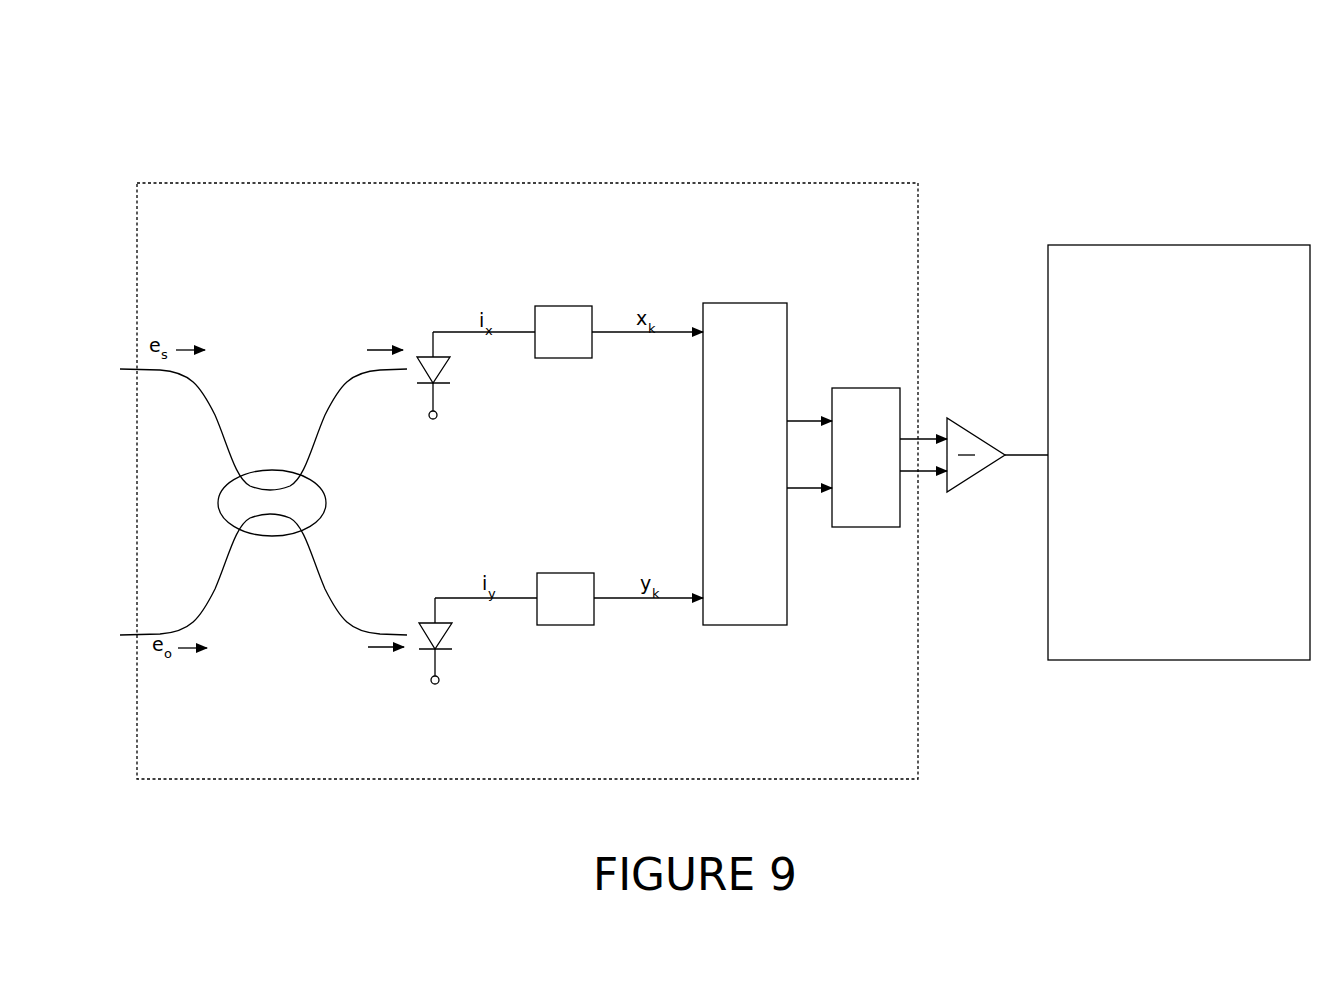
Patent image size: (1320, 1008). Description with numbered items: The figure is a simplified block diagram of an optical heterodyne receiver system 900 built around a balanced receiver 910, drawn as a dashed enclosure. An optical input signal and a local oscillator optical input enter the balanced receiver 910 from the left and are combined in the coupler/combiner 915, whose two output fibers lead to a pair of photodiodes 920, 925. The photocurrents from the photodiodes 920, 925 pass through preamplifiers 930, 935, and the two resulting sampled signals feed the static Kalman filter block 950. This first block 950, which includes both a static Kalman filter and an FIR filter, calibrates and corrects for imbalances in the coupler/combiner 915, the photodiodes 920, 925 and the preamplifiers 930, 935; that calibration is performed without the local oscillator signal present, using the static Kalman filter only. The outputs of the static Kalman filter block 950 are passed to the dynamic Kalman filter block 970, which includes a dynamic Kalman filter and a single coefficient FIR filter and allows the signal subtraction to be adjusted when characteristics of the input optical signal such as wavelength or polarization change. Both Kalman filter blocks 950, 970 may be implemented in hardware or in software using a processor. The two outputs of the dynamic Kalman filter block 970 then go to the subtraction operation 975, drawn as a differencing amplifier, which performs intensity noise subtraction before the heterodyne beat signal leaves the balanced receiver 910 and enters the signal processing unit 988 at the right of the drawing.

The optical heterodyne receiver system 900 is at (851, 86).
The balanced receiver 910 is at (453, 162).
The coupler/combiner 915 is at (268, 475).
The photodiode 920 is at (449, 365).
The photodiode 925 is at (451, 631).
The preamplifier 930 is at (562, 312).
The preamplifier 935 is at (566, 578).
The static Kalman filter block 950 is at (735, 310).
The dynamic Kalman filter block 970 is at (850, 392).
The subtraction operation 975 is at (962, 432).
The signal processing unit 988 is at (1146, 258).